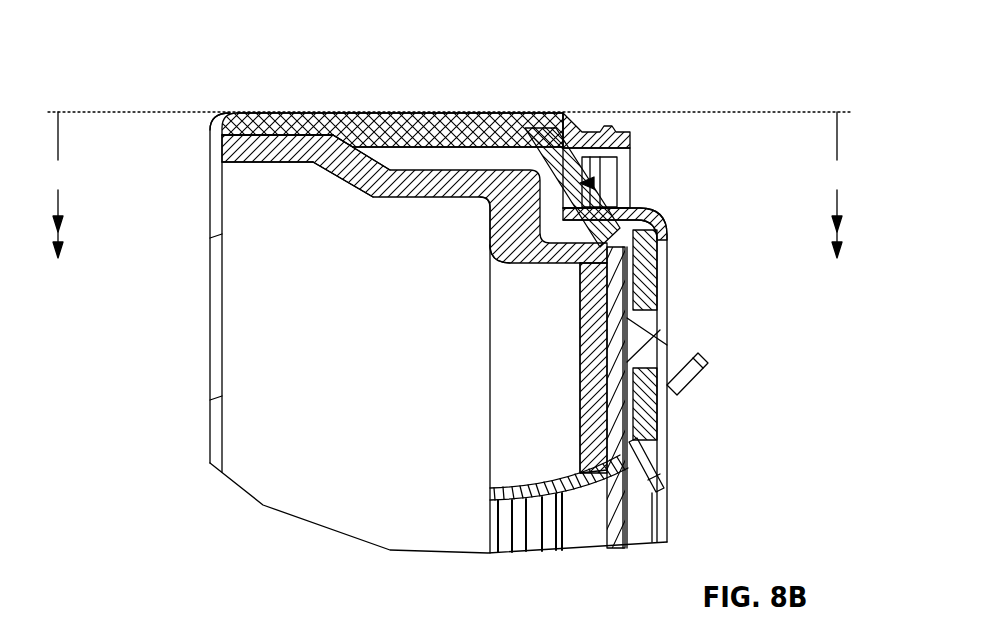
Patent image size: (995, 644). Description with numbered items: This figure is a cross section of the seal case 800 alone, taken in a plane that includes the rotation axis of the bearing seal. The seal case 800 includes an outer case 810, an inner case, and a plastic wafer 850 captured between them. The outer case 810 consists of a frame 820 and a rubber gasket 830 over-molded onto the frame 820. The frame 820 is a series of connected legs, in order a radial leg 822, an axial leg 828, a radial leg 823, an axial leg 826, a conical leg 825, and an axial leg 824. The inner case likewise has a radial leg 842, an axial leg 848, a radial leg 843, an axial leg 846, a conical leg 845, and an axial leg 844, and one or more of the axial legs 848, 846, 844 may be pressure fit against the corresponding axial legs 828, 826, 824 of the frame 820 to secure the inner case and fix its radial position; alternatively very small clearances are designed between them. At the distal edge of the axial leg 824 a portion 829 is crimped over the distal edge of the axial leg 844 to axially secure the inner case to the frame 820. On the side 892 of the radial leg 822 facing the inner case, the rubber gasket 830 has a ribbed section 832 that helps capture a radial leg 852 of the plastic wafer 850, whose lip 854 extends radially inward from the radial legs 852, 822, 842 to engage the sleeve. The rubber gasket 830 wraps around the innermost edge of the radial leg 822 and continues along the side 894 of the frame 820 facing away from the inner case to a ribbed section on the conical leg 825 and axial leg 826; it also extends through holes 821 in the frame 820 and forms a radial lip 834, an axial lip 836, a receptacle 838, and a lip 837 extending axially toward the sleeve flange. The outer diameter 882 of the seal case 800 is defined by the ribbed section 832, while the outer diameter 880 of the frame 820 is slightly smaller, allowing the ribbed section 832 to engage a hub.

The seal case 800 is at (120, 58).
The outer case 810 is at (496, 65).
The frame 820 is at (278, 76).
The holes 821 is at (663, 356).
The radial leg 822 is at (650, 272).
The radial leg 823 is at (557, 167).
The axial leg 824 is at (340, 112).
The conical leg 825 is at (382, 112).
The axial leg 826 is at (452, 112).
The axial leg 828 is at (598, 185).
The crimped portion 829 is at (210, 145).
The rubber gasket 830 is at (710, 290).
The ribbed section 832 is at (417, 112).
The radial lip 834 is at (660, 463).
The axial lip 836 is at (688, 380).
The lip 837 is at (615, 130).
The receptacle 838 is at (660, 177).
The radial leg 842 is at (590, 343).
The radial leg 843 is at (490, 213).
The axial leg 844 is at (262, 165).
The conical leg 845 is at (345, 172).
The axial leg 846 is at (432, 197).
The axial leg 848 is at (545, 266).
The plastic wafer 850 is at (530, 453).
The radial leg 852 is at (605, 377).
The lip 854 is at (588, 493).
The outer diameter 880 is at (58, 185).
The outer diameter 882 is at (837, 185).
The side 892 is at (620, 414).
The side 894 is at (680, 237).